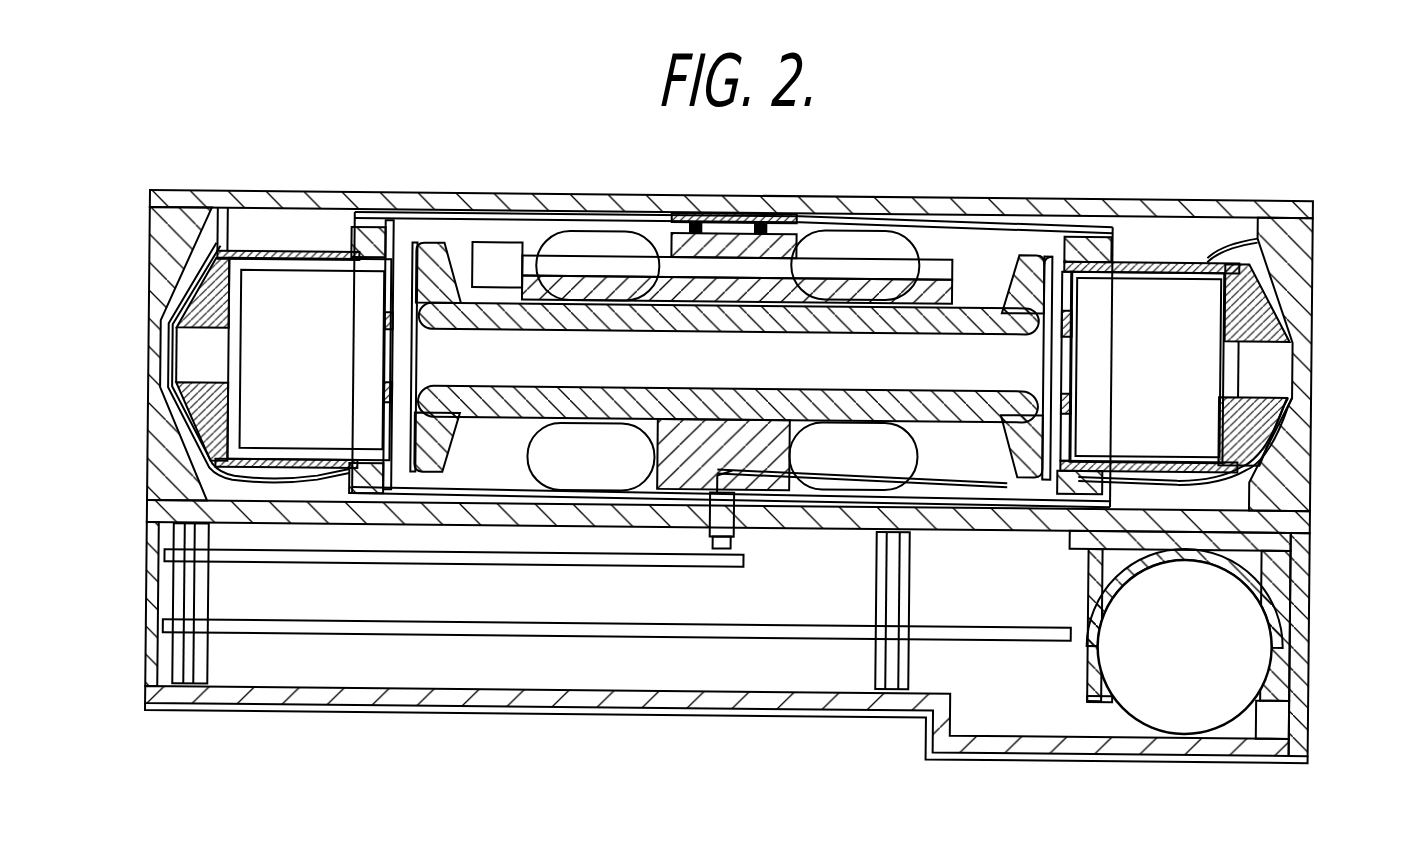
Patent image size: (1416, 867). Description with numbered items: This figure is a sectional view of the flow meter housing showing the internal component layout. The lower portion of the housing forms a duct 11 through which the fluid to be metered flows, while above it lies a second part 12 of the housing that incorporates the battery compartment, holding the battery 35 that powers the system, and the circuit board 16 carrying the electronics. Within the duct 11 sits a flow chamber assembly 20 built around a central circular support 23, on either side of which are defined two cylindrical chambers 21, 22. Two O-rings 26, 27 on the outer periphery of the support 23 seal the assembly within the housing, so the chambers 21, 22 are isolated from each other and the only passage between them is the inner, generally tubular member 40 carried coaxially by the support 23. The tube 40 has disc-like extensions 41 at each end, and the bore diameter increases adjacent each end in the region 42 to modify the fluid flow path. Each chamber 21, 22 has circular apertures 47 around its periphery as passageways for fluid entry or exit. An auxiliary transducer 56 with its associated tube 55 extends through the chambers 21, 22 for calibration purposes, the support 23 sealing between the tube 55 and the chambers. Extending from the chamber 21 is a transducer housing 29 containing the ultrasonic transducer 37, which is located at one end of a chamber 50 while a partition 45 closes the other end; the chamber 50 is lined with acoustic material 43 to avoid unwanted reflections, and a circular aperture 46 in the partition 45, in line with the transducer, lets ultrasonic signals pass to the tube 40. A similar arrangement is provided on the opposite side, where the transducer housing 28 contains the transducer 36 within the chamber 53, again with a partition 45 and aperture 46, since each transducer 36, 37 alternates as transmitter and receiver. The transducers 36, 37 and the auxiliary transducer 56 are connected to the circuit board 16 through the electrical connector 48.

The duct 11 is at (1292, 197).
The second part 12 is at (1308, 614).
The circuit board 16 is at (670, 563).
The flow chamber assembly 20 is at (732, 311).
The cylindrical chamber 21 is at (714, 449).
The cylindrical chamber 22 is at (1076, 192).
The central circular support 23 is at (710, 437).
The O-ring 26 is at (675, 174).
The O-ring 27 is at (755, 175).
The transducer housing 28 is at (1252, 228).
The transducer housing 29 is at (312, 193).
The battery 35 is at (1172, 717).
The transducer 36 is at (1270, 358).
The transducer 37 is at (185, 345).
The tubular member 40 is at (923, 412).
The disc-like extension 41 is at (723, 297).
The region 42 is at (1032, 377).
The acoustic material 43 is at (293, 193).
The partition 45 is at (1105, 423).
The circular aperture 46 is at (1074, 378).
The circular aperture 47 is at (733, 304).
The electrical connector 48 is at (740, 533).
The chamber 50 is at (224, 359).
The chamber 53 is at (1200, 425).
The tube 55 is at (608, 278).
The auxiliary transducer 56 is at (503, 287).